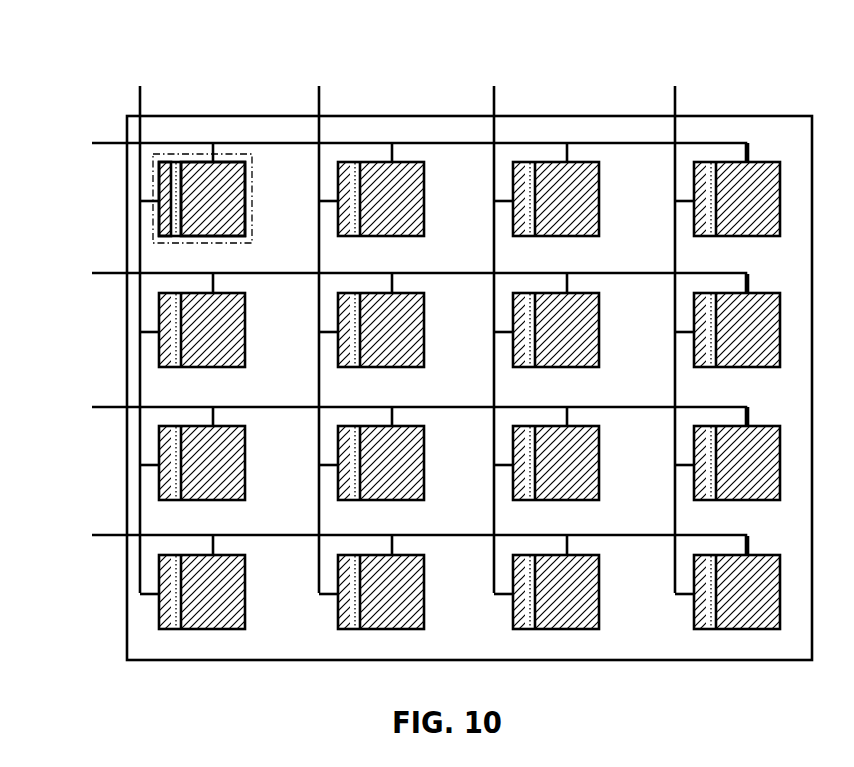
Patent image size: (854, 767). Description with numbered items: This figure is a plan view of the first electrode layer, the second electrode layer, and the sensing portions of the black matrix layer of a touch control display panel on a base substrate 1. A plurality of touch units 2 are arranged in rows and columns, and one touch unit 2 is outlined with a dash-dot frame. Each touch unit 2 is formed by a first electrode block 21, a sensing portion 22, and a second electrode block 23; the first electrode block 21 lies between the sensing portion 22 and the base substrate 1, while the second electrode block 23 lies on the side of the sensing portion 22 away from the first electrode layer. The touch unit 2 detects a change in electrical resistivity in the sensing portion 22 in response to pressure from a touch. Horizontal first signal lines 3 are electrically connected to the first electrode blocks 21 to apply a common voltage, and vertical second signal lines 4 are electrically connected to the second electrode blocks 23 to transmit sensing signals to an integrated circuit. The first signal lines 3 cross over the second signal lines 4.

The base substrate 1 is at (655, 643).
The touch unit 2 is at (252, 153).
The first signal line 3 is at (108, 142).
The second signal line 4 is at (141, 100).
The first electrode block 21 is at (133, 197).
The sensing portion 22 is at (138, 199).
The second electrode block 23 is at (232, 199).